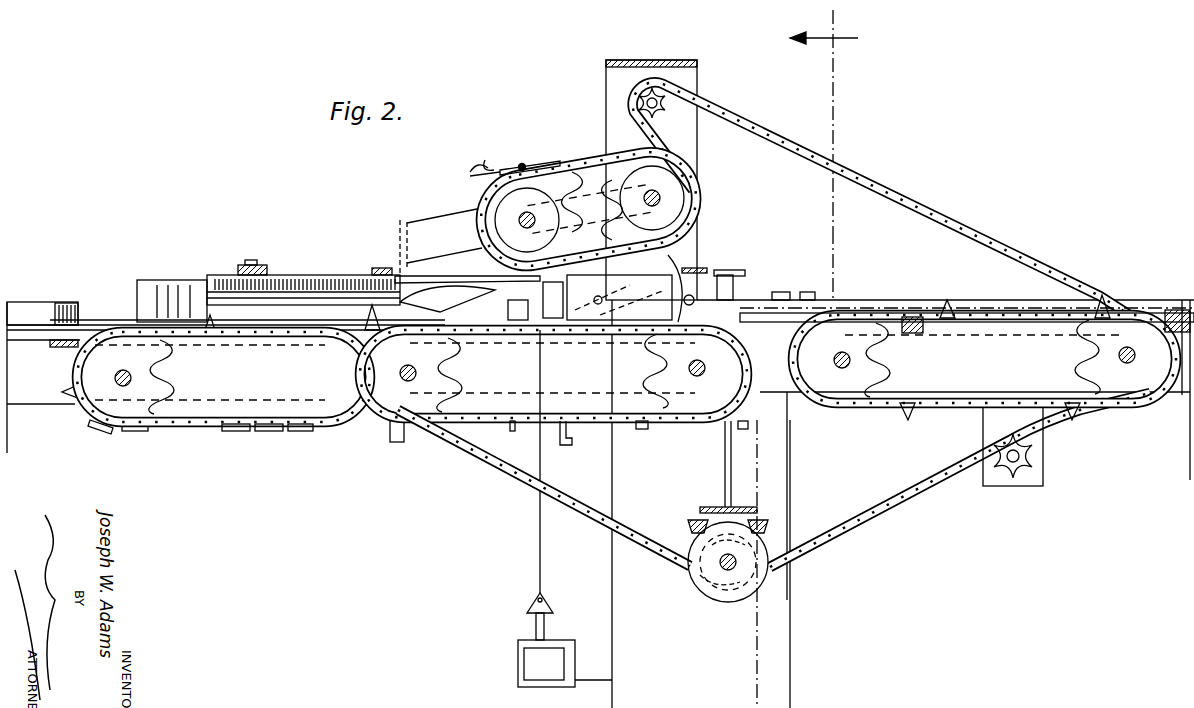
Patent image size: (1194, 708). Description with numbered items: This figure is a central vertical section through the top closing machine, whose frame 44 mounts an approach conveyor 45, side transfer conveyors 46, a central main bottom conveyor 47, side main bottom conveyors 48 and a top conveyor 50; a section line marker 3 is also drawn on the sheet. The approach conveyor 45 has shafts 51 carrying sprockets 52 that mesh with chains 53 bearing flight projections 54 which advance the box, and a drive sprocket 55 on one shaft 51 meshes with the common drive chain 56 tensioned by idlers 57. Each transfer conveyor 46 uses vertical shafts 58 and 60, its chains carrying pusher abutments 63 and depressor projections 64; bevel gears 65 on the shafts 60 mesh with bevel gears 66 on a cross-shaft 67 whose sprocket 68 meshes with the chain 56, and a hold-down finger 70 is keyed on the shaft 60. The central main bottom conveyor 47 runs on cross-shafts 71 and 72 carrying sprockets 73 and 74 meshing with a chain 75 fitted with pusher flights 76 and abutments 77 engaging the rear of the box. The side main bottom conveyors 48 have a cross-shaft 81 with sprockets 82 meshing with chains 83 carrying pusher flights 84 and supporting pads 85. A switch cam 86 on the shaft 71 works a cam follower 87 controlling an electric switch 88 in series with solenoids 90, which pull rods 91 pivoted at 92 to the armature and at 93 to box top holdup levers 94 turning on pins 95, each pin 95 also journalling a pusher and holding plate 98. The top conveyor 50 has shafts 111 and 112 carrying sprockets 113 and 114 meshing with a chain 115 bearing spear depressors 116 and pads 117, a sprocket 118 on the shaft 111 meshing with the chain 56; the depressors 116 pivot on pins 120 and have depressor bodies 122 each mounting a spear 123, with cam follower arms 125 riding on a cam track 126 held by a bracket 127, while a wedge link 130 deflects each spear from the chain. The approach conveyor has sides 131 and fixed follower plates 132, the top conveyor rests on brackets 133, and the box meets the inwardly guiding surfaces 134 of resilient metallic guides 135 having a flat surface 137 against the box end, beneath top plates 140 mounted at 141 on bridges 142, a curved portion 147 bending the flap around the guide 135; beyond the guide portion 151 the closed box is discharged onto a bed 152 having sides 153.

The section line 3- 3 is at (824, 120).
The frame 44 is at (40, 408).
The approach conveyor 45 is at (975, 312).
The transfer conveyors 46 is at (806, 300).
The central main bottom conveyor 47 is at (578, 335).
The side main bottom conveyors 48 is at (282, 335).
The top conveyor 50 is at (588, 158).
The shafts 51 is at (855, 360).
The sprockets 52 is at (884, 374).
The chains 53 is at (955, 408).
The flight projections 54 is at (945, 308).
The drive sprocket 55 is at (1140, 315).
The drive chain 56 is at (965, 238).
The idlers 57 is at (672, 110).
The vertical shafts 58 is at (778, 292).
The vertical shafts 60 is at (724, 462).
The pusher abutments 63 is at (739, 285).
The depressor projections 64 is at (708, 270).
The bevel gears 65 is at (770, 524).
The bevel gears 66 is at (728, 602).
The cross-shaft 67 is at (712, 575).
The sprocket 68 is at (700, 548).
The hold-down finger 70 is at (742, 280).
The cross-shaft 71 is at (440, 374).
The cross-shaft 72 is at (690, 368).
The sprocket 73 is at (455, 387).
The sprocket 74 is at (660, 380).
The chain 75 is at (519, 428).
The pusher flights 76 is at (645, 430).
The abutments 77 is at (570, 447).
The cross-shaft 81 is at (140, 380).
The sprockets 82 is at (165, 362).
The side main bottom conveyor chains 83 is at (328, 430).
The pusher flights 84 is at (215, 448).
The supporting pads 85 is at (272, 432).
The switch cam 86 is at (465, 354).
The switch operating cam follower 87 is at (362, 378).
The electric switch 88 is at (398, 442).
The solenoids 90 is at (518, 660).
The rods 91 is at (538, 557).
The pivotal connection 92 is at (527, 603).
The pivotal connection 93 is at (540, 288).
The box top holdup levers 94 is at (659, 288).
The pins 95 is at (619, 297).
The pusher and holding plate 98 is at (698, 309).
The shaft 111 is at (641, 201).
The shaft 112 is at (546, 220).
The sprocket 113 is at (690, 185).
The sprocket 114 is at (527, 217).
The chain 115 is at (480, 194).
The spear depressors 116 is at (492, 165).
The pads 117 is at (578, 140).
The sprocket 118 is at (700, 170).
The pins 120 is at (540, 166).
The depressor bodies 122 is at (521, 162).
The spear 123 is at (475, 168).
The cam follower arms 125 is at (714, 218).
The cam track 126 is at (652, 195).
The bracket 127 is at (592, 206).
The wedge link 130 is at (472, 174).
The sides 131 is at (967, 292).
The fixed follower plates 132 is at (860, 315).
The brackets 133 is at (444, 235).
The inwardly guiding surfaces 134 is at (467, 279).
The resilient metallic guides 135 is at (447, 299).
The flat surface 137 is at (325, 296).
The top plates 140 is at (325, 275).
The mounting 141 is at (404, 232).
The bridges 142 is at (253, 264).
The curved portion 147 is at (383, 316).
The guide portion 151 is at (190, 290).
The bed 152 is at (50, 330).
The sides 153 is at (25, 300).